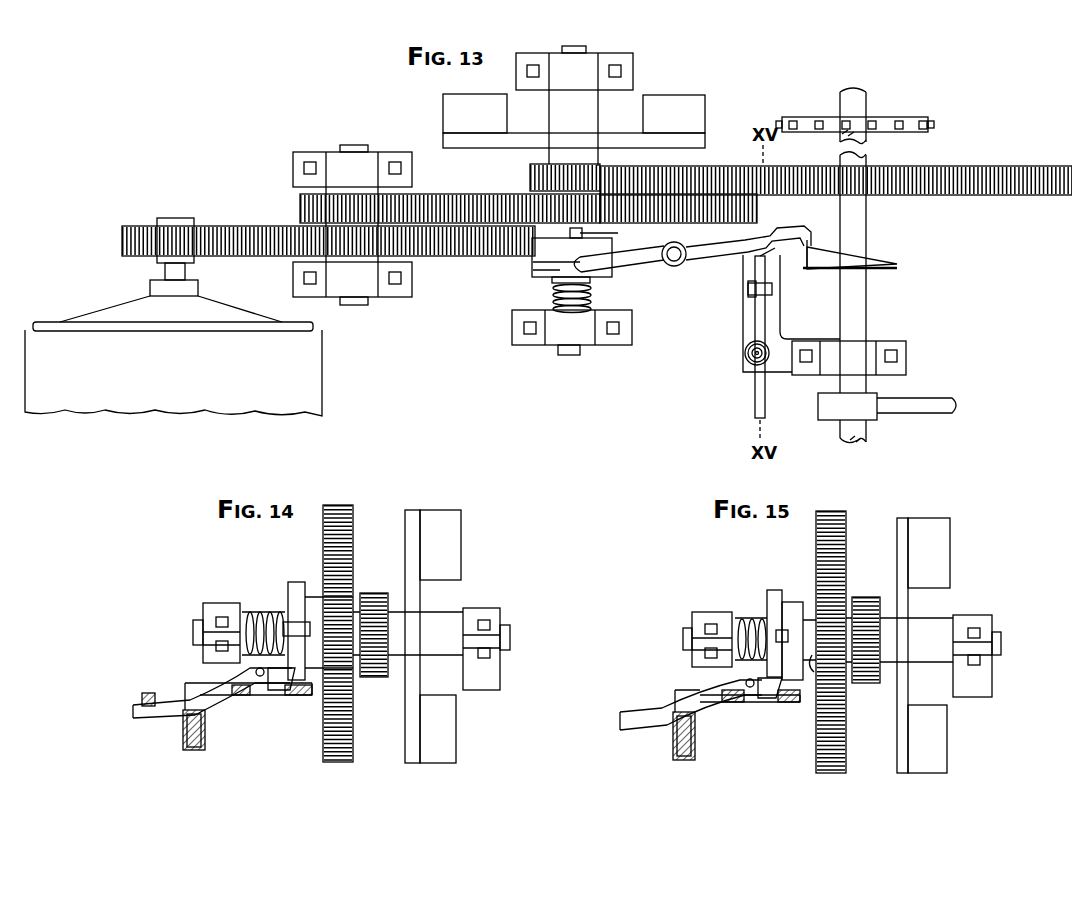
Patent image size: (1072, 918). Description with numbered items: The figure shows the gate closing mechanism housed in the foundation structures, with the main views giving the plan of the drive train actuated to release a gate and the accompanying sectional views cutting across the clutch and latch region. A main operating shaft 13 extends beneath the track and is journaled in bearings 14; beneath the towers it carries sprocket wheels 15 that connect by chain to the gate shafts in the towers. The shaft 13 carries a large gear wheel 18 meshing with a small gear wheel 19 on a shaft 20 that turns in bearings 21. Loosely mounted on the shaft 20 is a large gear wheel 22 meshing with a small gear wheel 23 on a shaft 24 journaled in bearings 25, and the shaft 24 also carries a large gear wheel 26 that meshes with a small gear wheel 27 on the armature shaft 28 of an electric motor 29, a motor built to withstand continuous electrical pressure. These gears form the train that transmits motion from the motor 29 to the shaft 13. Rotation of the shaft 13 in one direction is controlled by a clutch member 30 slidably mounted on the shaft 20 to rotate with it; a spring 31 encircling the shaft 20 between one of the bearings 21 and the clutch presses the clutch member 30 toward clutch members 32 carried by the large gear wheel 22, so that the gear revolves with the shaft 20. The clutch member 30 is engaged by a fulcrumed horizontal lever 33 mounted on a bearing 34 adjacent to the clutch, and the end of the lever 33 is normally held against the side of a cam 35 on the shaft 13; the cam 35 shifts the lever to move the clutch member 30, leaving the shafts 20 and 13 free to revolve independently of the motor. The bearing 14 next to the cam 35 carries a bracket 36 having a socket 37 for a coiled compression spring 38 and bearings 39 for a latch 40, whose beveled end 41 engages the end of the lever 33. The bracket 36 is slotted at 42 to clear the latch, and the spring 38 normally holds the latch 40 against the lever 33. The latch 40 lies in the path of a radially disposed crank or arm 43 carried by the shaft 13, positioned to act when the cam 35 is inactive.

In FIG. 13, the main operating shaft 13 is at (866, 304).
In FIG. 13, the bearings 14 is at (906, 357).
In FIG. 13, the sprocket wheels 15 is at (902, 122).
In FIG. 13, the large gear wheel 18 is at (1011, 180).
In FIG. 13, the small gear wheel 19 is at (530, 174).
In FIG. 14, the small gear wheel 19 is at (375, 594).
In FIG. 15, the small gear wheel 19 is at (867, 598).
In FIG. 13, the shaft 20 is at (567, 356).
In FIG. 14, the shaft 20 is at (193, 633).
In FIG. 15, the shaft 20 is at (683, 639).
In FIG. 13, the bearings 21 is at (633, 63).
In FIG. 14, the bearings 21 is at (211, 592).
In FIG. 15, the bearings 21 is at (705, 612).
In FIG. 13, the large gear wheel 22 is at (757, 206).
In FIG. 14, the large gear wheel 22 is at (343, 518).
In FIG. 15, the large gear wheel 22 is at (836, 525).
In FIG. 13, the small gear wheel 23 is at (300, 205).
In FIG. 13, the shaft 24 is at (353, 145).
In FIG. 13, the bearings 25 is at (367, 160).
In FIG. 13, the large gear wheel 26 is at (470, 260).
In FIG. 13, the small gear wheel 27 is at (122, 240).
In FIG. 13, the armature shaft 28 is at (172, 271).
In FIG. 13, the electric motor 29 is at (173, 356).
In FIG. 13, the clutch member 30 is at (537, 270).
In FIG. 14, the clutch member 30 is at (293, 590).
In FIG. 15, the clutch member 30 is at (790, 600).
In FIG. 13, the spring 31 is at (592, 291).
In FIG. 14, the spring 31 is at (256, 612).
In FIG. 15, the spring 31 is at (740, 618).
In FIG. 13, the clutch members 32 is at (615, 243).
In FIG. 15, the clutch members 32 is at (812, 672).
In FIG. 13, the fulcrumed horizontal lever 33 is at (738, 250).
In FIG. 13, the bearing 34 is at (672, 262).
In FIG. 13, the cam 35 is at (897, 265).
In FIG. 13, the bracket 36 is at (776, 322).
In FIG. 14, the bracket 36 is at (222, 705).
In FIG. 15, the bracket 36 is at (722, 705).
In FIG. 13, the socket 37 is at (746, 349).
In FIG. 14, the socket 37 is at (183, 736).
In FIG. 15, the socket 37 is at (673, 738).
In FIG. 13, the coiled compression spring 38 is at (747, 356).
In FIG. 14, the coiled compression spring 38 is at (191, 752).
In FIG. 15, the coiled compression spring 38 is at (680, 760).
In FIG. 13, the bearings 39 is at (774, 289).
In FIG. 14, the bearings 39 is at (236, 676).
In FIG. 15, the bearings 39 is at (742, 688).
In FIG. 13, the latch 40 is at (755, 391).
In FIG. 14, the latch 40 is at (133, 712).
In FIG. 15, the latch 40 is at (644, 711).
In FIG. 13, the beveled end 41 is at (763, 260).
In FIG. 14, the beveled end 41 is at (240, 696).
In FIG. 15, the beveled end 41 is at (742, 704).
In FIG. 14, the slot 42 is at (283, 696).
In FIG. 15, the slot 42 is at (774, 704).
In FIG. 13, the crank or arm 43 is at (960, 406).
In FIG. 14, the crank or arm 43 is at (142, 698).